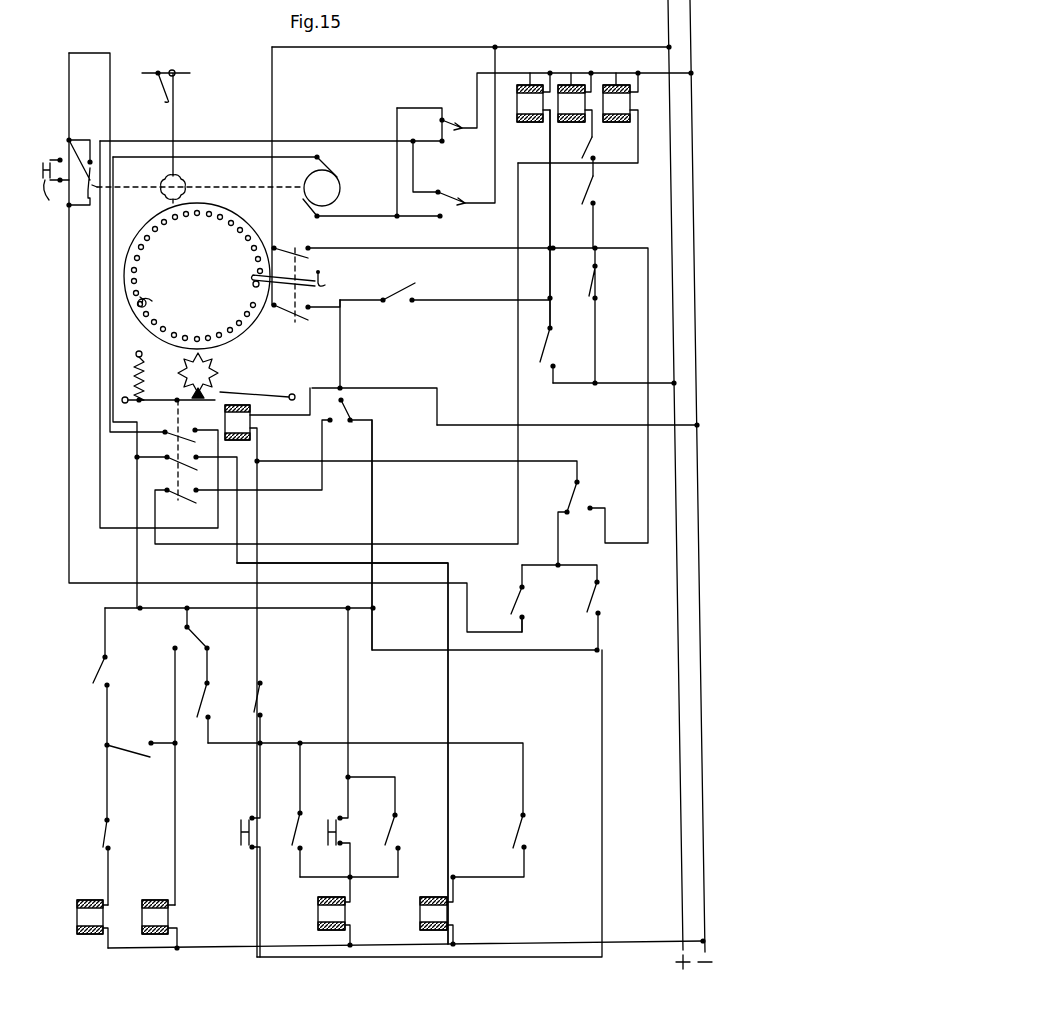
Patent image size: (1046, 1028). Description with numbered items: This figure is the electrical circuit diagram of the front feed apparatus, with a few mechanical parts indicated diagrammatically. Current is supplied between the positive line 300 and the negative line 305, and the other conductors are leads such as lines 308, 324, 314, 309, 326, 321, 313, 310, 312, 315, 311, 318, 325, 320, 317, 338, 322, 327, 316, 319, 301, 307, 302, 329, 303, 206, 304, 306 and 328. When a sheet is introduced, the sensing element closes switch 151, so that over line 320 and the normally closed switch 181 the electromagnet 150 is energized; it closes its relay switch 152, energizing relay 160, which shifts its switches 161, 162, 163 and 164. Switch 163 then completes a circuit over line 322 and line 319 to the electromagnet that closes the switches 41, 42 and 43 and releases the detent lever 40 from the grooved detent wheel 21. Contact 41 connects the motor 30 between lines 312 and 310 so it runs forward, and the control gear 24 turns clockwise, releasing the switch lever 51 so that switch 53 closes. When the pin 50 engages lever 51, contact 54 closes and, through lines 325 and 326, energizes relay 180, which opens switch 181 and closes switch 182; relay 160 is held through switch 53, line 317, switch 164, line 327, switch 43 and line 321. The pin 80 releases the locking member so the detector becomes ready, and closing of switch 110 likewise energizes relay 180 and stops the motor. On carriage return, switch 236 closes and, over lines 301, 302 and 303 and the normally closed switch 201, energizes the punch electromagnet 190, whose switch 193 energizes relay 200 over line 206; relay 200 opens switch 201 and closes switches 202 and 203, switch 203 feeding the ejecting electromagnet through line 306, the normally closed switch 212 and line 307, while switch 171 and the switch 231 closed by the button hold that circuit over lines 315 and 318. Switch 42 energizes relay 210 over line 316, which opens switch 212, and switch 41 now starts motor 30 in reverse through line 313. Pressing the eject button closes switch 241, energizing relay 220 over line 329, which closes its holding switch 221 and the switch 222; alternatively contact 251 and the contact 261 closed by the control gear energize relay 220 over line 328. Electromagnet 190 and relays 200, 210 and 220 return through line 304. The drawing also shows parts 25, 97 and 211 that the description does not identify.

The positive line 300 is at (678, 658).
The negative line 305 is at (698, 714).
The line 308 is at (463, 47).
The line 324 is at (272, 108).
The line 314 is at (562, 62).
The line 309 is at (495, 140).
The relay 180 is at (530, 84).
The relay magnet 160 is at (575, 84).
The electromagnet 150 is at (620, 84).
The relay switch 152 is at (588, 150).
The switch 151 is at (590, 194).
The line 326 is at (550, 224).
The line 321 is at (642, 155).
The line 313 is at (403, 108).
The relay switch 161 is at (452, 122).
The line 310 is at (356, 138).
The relay switch 162 is at (478, 196).
The line 312 is at (355, 216).
The motor 30 is at (340, 190).
The line 315 is at (108, 101).
The line 311 is at (96, 143).
The switch 97 is at (68, 158).
The switch 231 is at (52, 206).
The line 318 is at (70, 368).
The drive gear 25 is at (200, 180).
The control gear 24 is at (160, 218).
The pin 50 is at (155, 295).
The pin 80 is at (252, 287).
The switch lever 51 is at (333, 279).
The contact 54 is at (300, 249).
The switch 53 is at (295, 322).
The line 325 is at (478, 236).
The switch 182 is at (404, 284).
The relay switch 181 is at (596, 288).
The switch 110 is at (548, 342).
The line 320 is at (622, 378).
The line 317 is at (342, 354).
The line 338 is at (438, 396).
The line 322 is at (646, 416).
The relay switch 164 is at (354, 411).
The grooved detent wheel 21 is at (218, 368).
The detent lever 40 is at (160, 399).
The contact 41 is at (173, 440).
The switch 42 is at (181, 472).
The switch 43 is at (185, 506).
The line 327 is at (322, 488).
The line 316 is at (244, 504).
The line 319 is at (462, 464).
The relay switch 163 is at (580, 489).
The line 301 is at (375, 512).
The relay switch 171 is at (522, 599).
The switch 222 is at (599, 587).
The line 307 is at (260, 586).
The line 302 is at (329, 612).
The line 329 is at (350, 682).
The switch 236 is at (95, 676).
The relay switch 193 is at (195, 636).
The relay switch 203 is at (209, 706).
The relay switch 202 is at (135, 750).
The line 303 is at (108, 788).
The line 206 is at (172, 804).
The relay switch 201 is at (102, 838).
The electromagnet 190 is at (90, 900).
The relay 200 is at (155, 900).
The line 304 is at (638, 940).
The relay switch 212 is at (263, 690).
The line 306 is at (236, 744).
The contact 251 is at (240, 821).
The contact 261 is at (293, 822).
The switch 241 is at (328, 822).
The switch 221 is at (398, 818).
The relay contact 211 is at (528, 818).
The relay 220 is at (317, 913).
The relay 210 is at (420, 913).
The line 328 is at (595, 738).